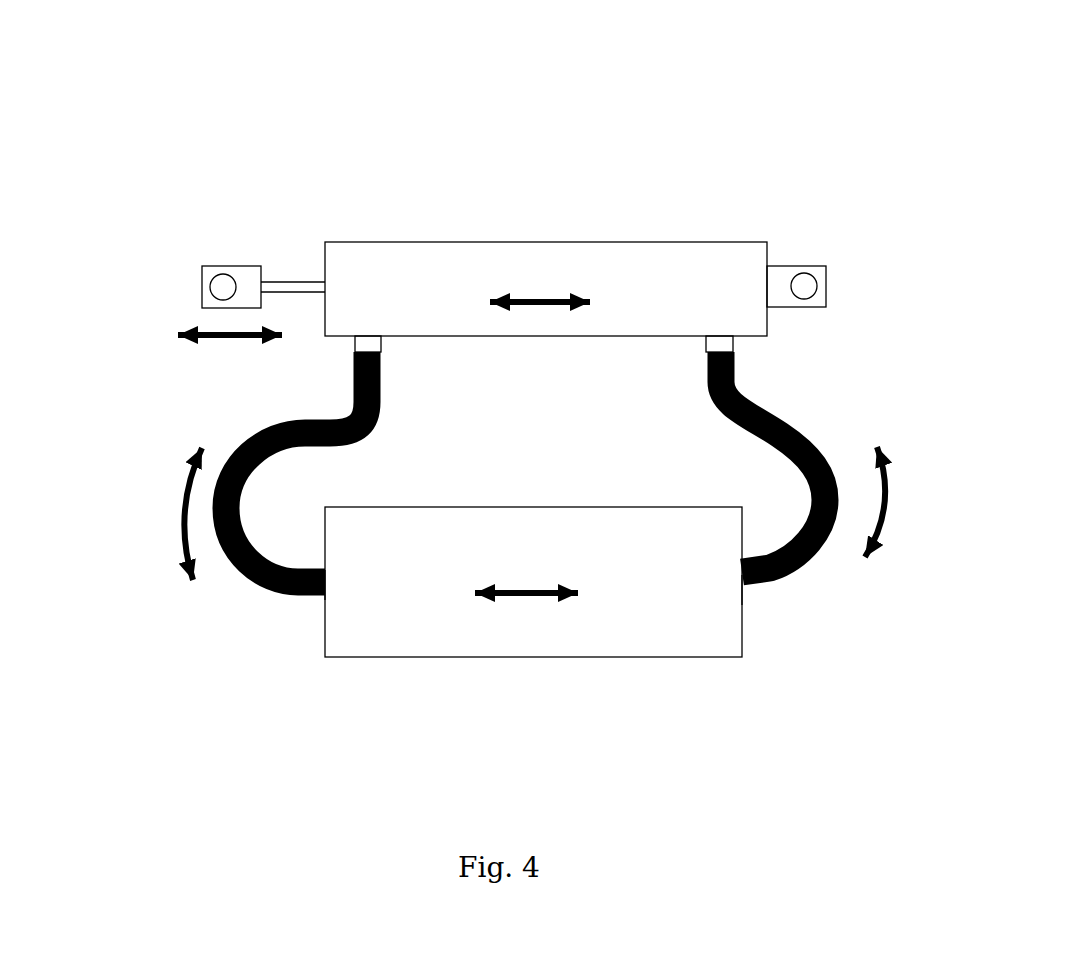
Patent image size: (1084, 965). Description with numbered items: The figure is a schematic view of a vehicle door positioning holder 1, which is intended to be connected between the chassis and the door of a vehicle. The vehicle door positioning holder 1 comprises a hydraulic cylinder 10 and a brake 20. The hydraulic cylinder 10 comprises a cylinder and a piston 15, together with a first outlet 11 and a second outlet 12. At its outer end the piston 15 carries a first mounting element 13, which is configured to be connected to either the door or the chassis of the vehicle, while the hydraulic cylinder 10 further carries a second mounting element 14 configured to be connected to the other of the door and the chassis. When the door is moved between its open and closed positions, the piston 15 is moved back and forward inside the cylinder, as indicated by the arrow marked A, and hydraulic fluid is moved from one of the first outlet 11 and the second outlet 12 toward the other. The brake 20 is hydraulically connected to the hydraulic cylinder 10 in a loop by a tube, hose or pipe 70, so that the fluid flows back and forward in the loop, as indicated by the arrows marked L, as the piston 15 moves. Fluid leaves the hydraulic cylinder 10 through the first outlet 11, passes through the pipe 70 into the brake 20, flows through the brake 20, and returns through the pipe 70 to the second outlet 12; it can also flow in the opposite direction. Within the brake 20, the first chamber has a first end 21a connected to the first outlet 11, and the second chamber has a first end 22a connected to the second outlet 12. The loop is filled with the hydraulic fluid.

The vehicle door positioning holder 1 is at (313, 158).
The hydraulic cylinder 10 is at (583, 241).
The first outlet 11 is at (735, 352).
The second outlet 12 is at (351, 357).
The first mounting element 13 is at (220, 265).
The second mounting element 14 is at (816, 262).
The piston 15 is at (294, 282).
The brake 20 is at (512, 659).
The first end of the first chamber 21a is at (744, 603).
The first end of the second chamber 22a is at (323, 600).
The pipe 70 is at (241, 570).